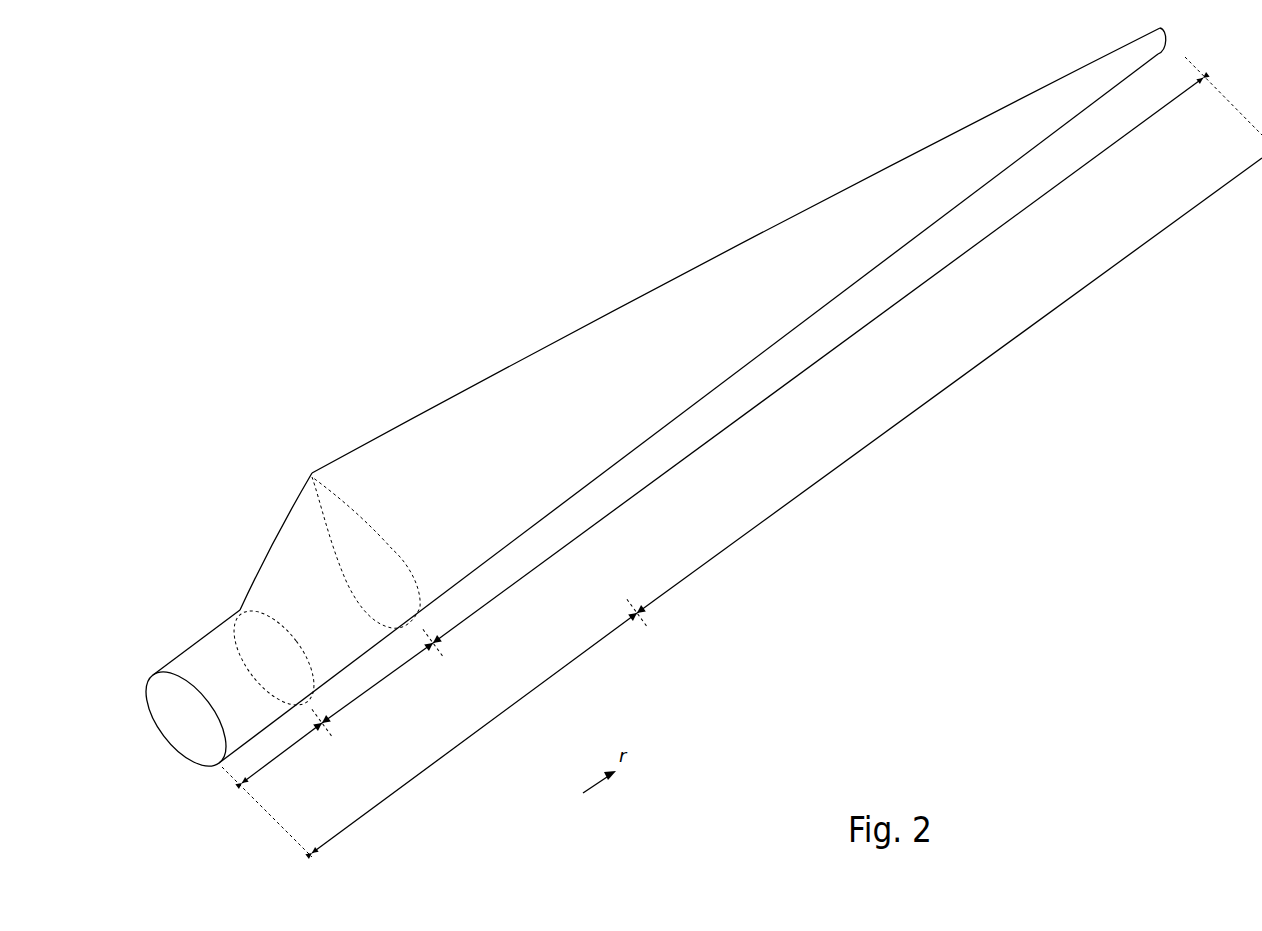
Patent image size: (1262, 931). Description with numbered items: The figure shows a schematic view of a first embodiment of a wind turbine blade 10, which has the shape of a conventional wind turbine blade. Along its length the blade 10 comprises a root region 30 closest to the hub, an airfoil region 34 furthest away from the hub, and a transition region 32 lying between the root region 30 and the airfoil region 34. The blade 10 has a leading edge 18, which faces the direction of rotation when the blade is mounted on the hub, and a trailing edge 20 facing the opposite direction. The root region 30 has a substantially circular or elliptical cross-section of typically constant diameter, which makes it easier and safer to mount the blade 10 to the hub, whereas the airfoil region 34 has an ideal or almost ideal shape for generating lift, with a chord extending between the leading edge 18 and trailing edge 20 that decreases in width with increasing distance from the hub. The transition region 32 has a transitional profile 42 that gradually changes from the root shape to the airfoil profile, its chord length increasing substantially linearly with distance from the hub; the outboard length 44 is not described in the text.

The wind turbine blade 10 is at (648, 404).
The leading edge 18 is at (855, 286).
The trailing edge 20 is at (865, 181).
The root region 30 is at (289, 751).
The transition region 32 is at (386, 679).
The airfoil region 34 is at (744, 417).
The transitional profile 42 is at (479, 727).
The outboard blade portion 44 is at (781, 509).